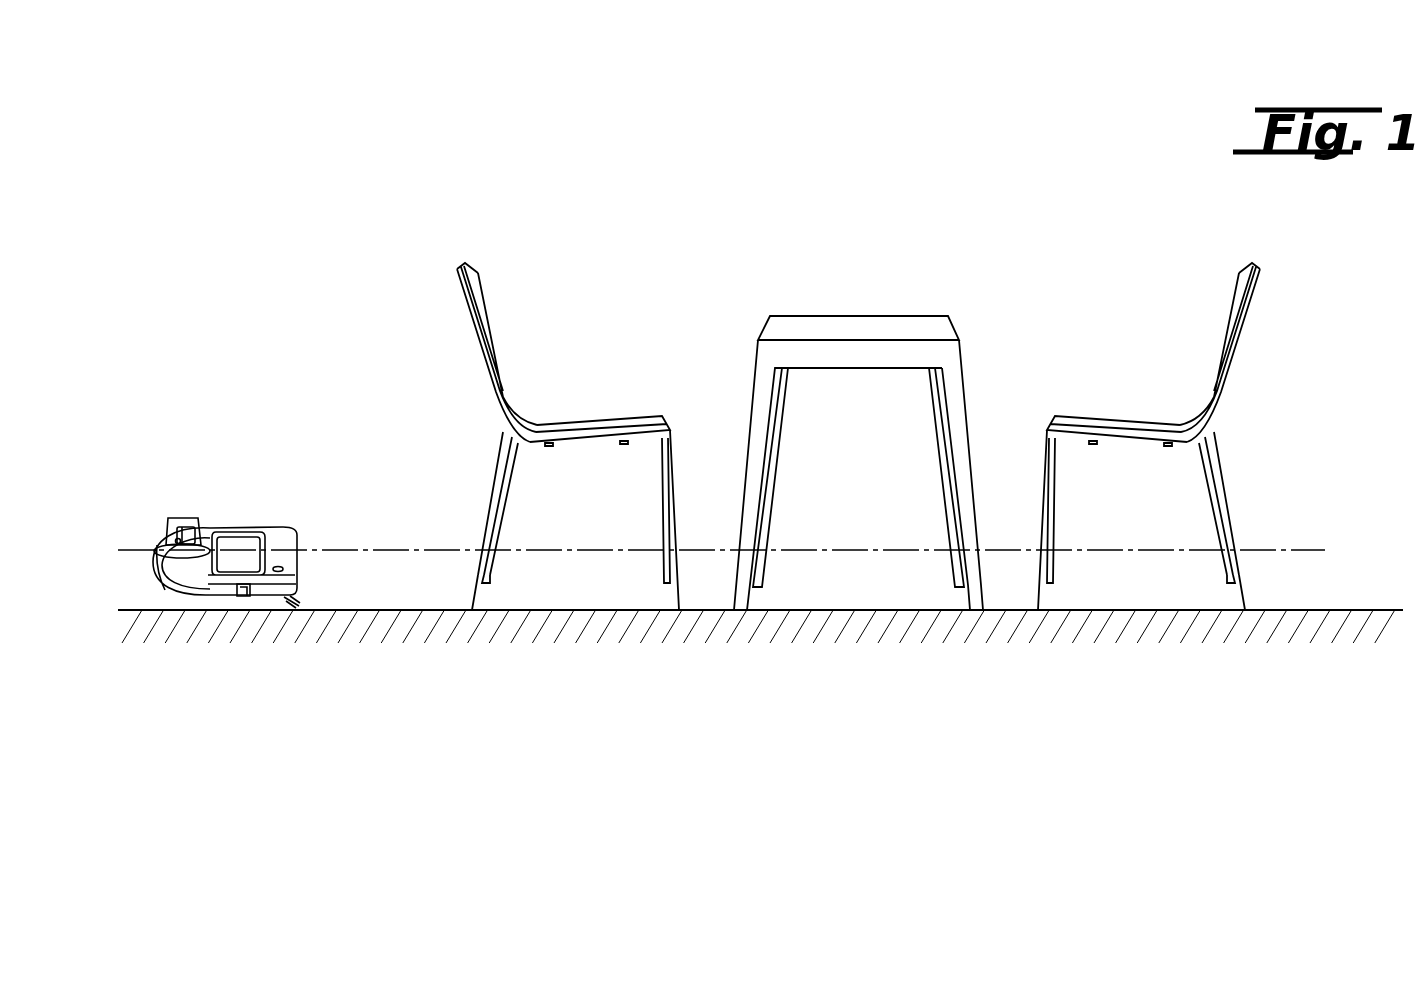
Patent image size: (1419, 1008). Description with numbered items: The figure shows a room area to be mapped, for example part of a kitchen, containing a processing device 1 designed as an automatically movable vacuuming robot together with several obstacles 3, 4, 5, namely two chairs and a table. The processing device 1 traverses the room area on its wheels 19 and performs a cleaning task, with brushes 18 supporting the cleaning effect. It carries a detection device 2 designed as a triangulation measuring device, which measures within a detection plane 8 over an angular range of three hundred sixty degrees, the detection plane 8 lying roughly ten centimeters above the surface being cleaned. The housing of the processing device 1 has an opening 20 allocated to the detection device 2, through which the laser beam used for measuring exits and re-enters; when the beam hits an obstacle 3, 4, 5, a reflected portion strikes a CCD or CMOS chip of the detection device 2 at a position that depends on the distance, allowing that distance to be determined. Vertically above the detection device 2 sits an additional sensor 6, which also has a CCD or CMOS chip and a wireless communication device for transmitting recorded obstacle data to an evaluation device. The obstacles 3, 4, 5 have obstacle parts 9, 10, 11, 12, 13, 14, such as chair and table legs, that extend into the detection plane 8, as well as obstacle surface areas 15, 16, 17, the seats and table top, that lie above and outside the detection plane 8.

The processing device 1 is at (225, 545).
The detection device 2 is at (162, 555).
The obstacle 3 is at (568, 446).
The obstacle 4 is at (858, 446).
The obstacle 5 is at (1181, 447).
The additional sensor 6 is at (176, 533).
The detection plane 8 is at (368, 550).
The obstacle part 9 is at (534, 593).
The obstacle part 10 is at (473, 595).
The obstacle part 11 is at (886, 547).
The obstacle part 12 is at (973, 598).
The obstacle part 13 is at (1202, 593).
The obstacle part 14 is at (1238, 603).
The obstacle surface area 15 is at (590, 430).
The obstacle surface area 16 is at (873, 328).
The obstacle surface area 17 is at (1127, 423).
The brushes 18 is at (283, 603).
The wheels 19 is at (222, 598).
The opening 20 is at (193, 556).